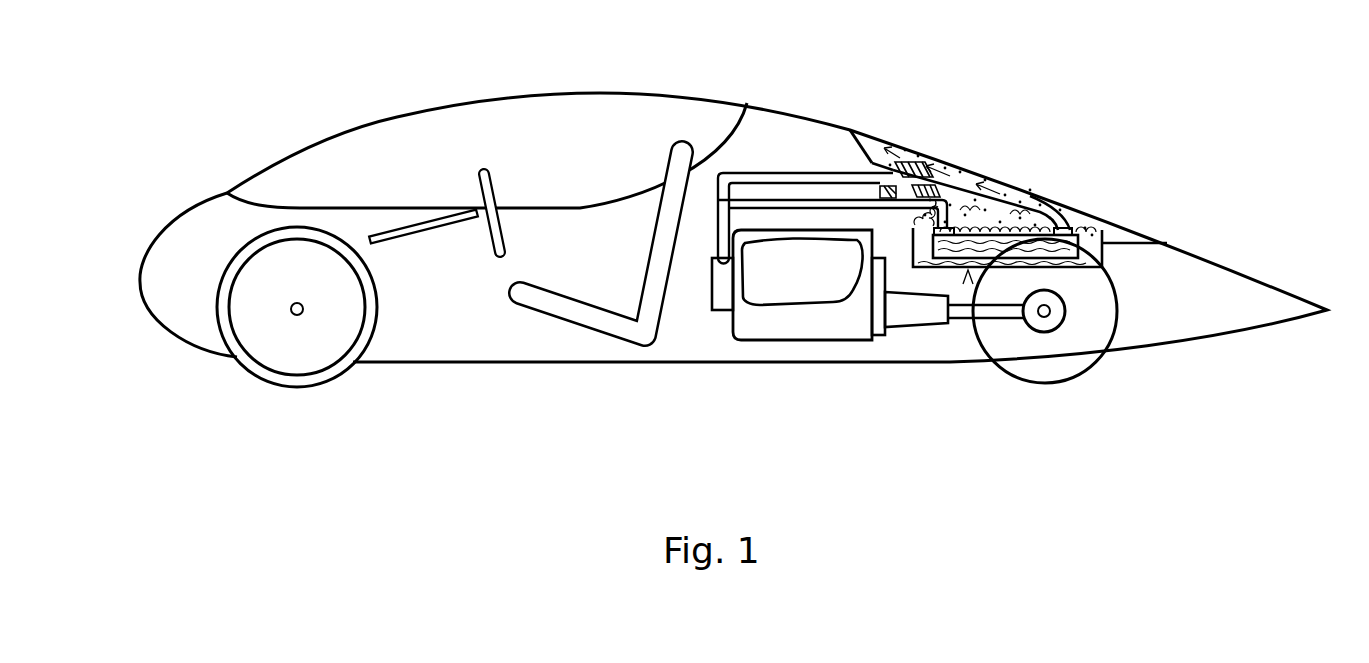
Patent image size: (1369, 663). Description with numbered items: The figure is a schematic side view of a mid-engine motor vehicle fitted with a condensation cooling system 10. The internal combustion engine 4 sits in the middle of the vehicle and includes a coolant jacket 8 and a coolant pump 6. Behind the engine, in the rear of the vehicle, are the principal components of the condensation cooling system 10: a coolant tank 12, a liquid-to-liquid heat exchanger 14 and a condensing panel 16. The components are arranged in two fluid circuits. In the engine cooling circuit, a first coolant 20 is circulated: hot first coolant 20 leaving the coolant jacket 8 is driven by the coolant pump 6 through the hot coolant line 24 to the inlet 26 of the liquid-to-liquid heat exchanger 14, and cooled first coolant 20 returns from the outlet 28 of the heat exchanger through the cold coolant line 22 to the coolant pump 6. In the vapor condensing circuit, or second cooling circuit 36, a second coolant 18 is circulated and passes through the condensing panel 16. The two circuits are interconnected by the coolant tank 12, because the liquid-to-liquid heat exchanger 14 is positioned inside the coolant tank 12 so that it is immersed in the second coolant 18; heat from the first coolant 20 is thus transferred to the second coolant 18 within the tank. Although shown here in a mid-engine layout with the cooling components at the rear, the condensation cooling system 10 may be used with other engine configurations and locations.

The internal combustion engine 4 is at (822, 340).
The coolant pump 6 is at (710, 283).
The coolant jacket 8 is at (772, 310).
The condensation cooling system 10 is at (1157, 114).
The coolant tank 12 is at (968, 272).
The liquid-to-liquid heat exchanger 14 is at (1108, 222).
The condensing panel 16 is at (940, 152).
The second coolant 18 is at (922, 257).
The first coolant 20 is at (905, 165).
The cold coolant line 22 is at (823, 170).
The hot coolant line 24 is at (786, 197).
The inlet 26 is at (977, 218).
The outlet 28 is at (1078, 226).
The second cooling circuit 36 is at (1063, 172).